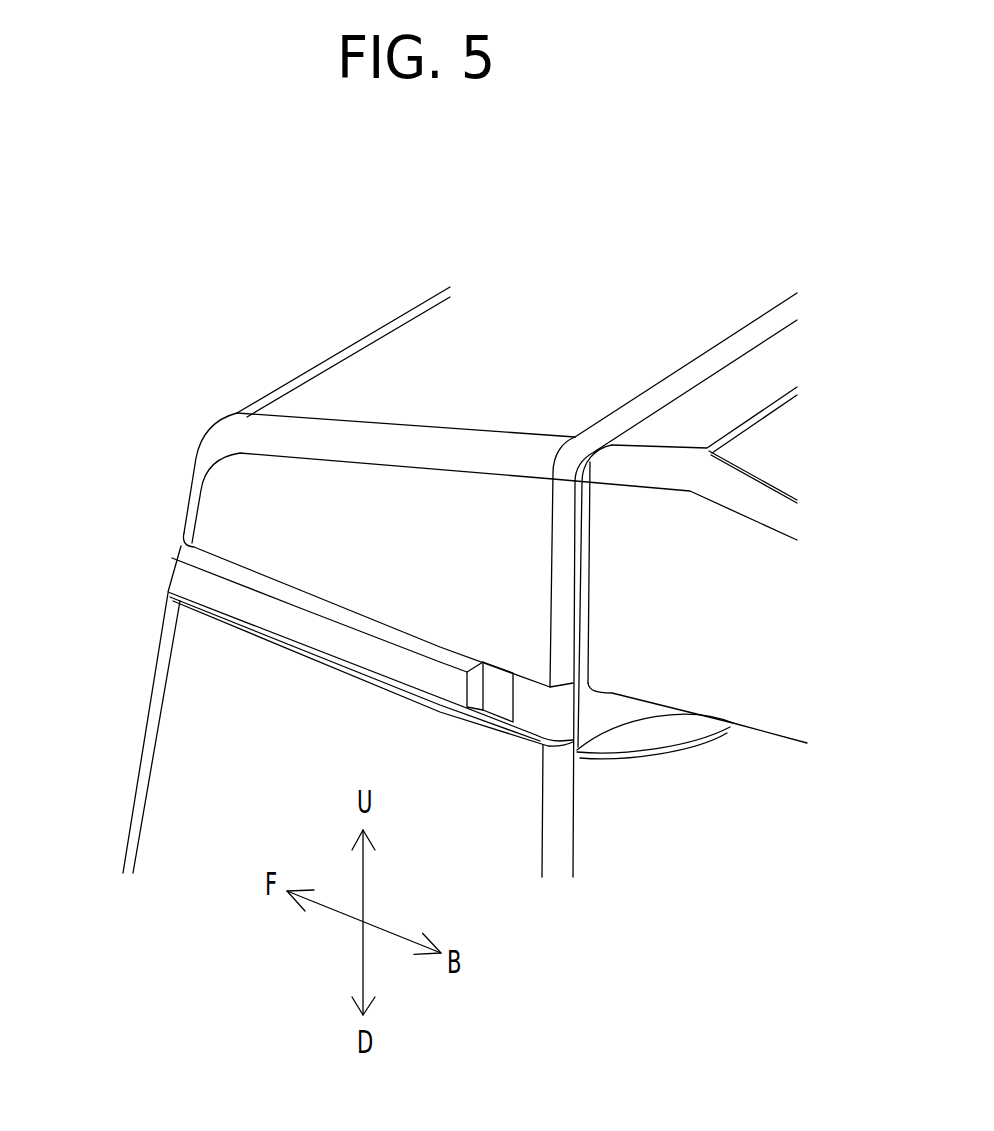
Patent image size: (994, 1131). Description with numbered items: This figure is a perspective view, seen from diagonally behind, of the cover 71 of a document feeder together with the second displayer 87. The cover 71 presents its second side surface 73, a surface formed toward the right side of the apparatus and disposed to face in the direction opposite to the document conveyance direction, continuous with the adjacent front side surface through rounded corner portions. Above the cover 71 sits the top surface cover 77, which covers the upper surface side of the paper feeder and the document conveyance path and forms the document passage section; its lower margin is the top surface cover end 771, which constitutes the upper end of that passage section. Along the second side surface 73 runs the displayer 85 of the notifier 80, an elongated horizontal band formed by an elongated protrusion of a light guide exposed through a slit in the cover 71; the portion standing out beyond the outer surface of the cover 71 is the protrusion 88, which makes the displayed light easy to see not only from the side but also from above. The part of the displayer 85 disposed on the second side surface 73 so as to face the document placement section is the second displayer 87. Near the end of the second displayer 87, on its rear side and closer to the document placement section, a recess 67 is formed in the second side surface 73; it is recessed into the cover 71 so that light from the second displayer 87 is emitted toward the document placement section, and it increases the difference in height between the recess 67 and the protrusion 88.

The cover 71 is at (368, 367).
The second side surface 73 is at (450, 561).
The top surface cover 77 is at (750, 610).
The top surface cover end 771 is at (773, 742).
The notifier 80 is at (319, 639).
The displayer 85 is at (225, 610).
The second displayer 87 is at (288, 636).
The protrusion 88 is at (330, 612).
The recess 67 is at (526, 712).